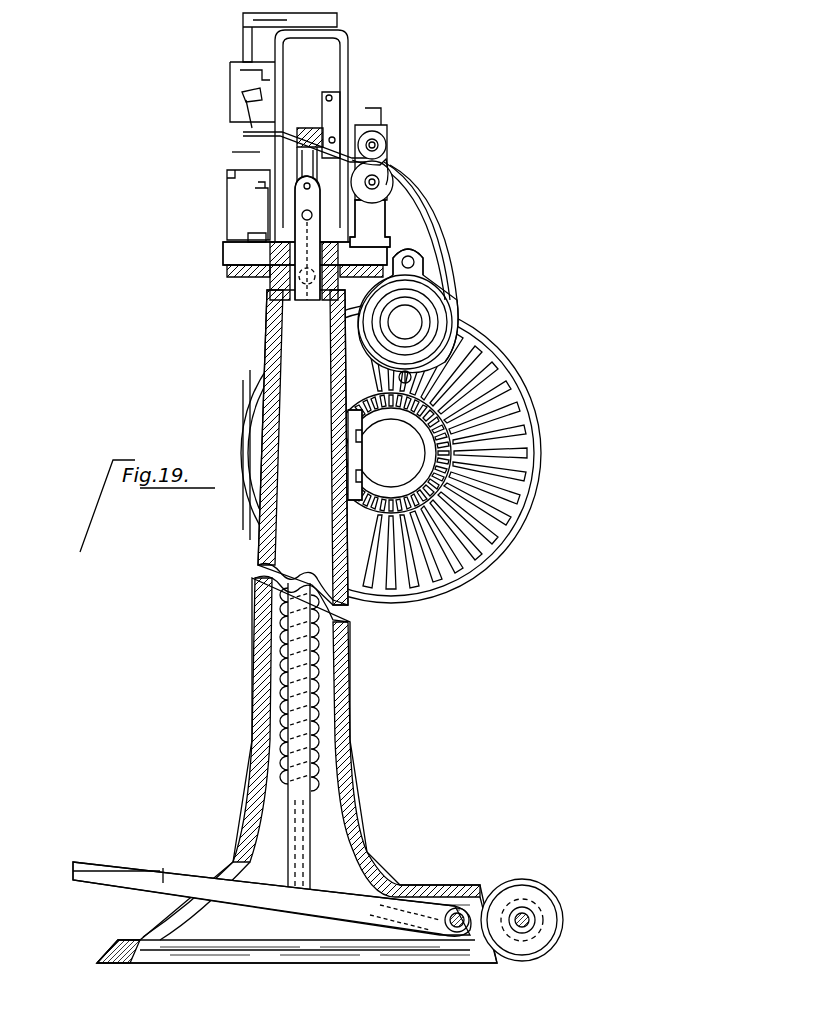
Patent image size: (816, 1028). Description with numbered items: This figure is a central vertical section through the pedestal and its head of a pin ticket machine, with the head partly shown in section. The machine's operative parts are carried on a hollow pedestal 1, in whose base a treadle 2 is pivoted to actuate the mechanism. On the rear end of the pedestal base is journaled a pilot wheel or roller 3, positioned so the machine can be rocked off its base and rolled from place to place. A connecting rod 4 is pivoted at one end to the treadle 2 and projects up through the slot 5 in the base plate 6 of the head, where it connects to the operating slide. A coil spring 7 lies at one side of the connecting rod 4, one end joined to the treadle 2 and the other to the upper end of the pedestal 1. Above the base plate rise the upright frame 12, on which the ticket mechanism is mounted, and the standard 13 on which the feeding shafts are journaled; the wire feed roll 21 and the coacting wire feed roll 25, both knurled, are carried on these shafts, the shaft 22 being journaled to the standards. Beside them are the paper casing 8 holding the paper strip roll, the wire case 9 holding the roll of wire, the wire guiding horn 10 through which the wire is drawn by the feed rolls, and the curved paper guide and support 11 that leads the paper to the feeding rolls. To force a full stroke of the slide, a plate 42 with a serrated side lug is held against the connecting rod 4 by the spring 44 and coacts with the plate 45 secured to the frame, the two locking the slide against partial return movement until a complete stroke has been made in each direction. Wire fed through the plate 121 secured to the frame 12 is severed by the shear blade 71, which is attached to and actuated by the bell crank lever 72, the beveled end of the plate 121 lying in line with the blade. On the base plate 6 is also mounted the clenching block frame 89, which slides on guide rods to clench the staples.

The hollow pedestal 1 is at (278, 620).
The treadle 2 is at (190, 872).
The pilot wheel or roller 3 is at (545, 880).
The connecting rod 4 is at (305, 740).
The slot 5 is at (276, 270).
The base plate 6 is at (240, 265).
The coil spring 7 is at (290, 650).
The paper casing 8 is at (534, 486).
The wire case 9 is at (440, 316).
The wire guiding horn 10 is at (438, 198).
The curved paper guide and support 11 is at (437, 245).
The upright frame 12 is at (336, 60).
The standard 13 is at (378, 230).
The wire feed roll 21 is at (385, 196).
The shaft 22 is at (386, 159).
The coacting wire feed roll 25 is at (387, 145).
The plate 42 is at (305, 164).
The spring 44 is at (258, 238).
The coacting plate 45 is at (355, 112).
The shear blade 71 is at (240, 110).
The bell crank lever 72 is at (252, 95).
The clenching block frame 89 is at (245, 200).
The plate 121 is at (246, 134).